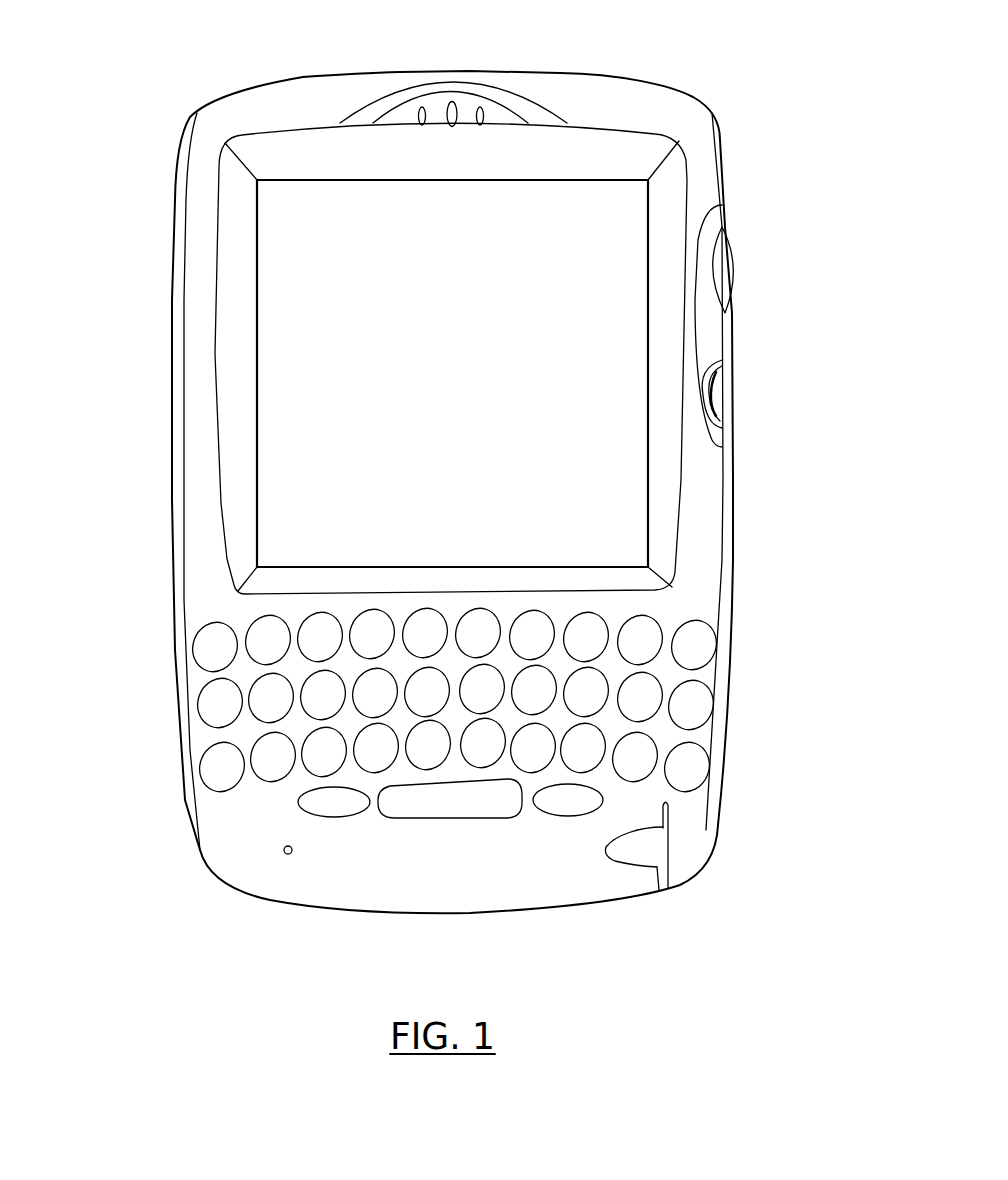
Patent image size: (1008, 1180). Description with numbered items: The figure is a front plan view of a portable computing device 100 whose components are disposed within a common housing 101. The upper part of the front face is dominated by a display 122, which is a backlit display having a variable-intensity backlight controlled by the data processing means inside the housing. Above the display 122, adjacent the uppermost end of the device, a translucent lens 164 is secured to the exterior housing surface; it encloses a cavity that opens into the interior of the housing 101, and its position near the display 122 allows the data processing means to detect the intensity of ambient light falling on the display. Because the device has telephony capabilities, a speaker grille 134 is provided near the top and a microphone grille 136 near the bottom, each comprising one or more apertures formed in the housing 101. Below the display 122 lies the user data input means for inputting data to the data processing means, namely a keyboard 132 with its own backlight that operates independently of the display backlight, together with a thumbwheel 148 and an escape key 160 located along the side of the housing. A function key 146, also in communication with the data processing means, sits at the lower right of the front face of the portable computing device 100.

The portable computing device 100 is at (163, 112).
The housing 101 is at (303, 77).
The translucent lens 164 is at (677, 107).
The display 122 is at (648, 480).
The speaker grille 134 is at (452, 127).
The thumbwheel 148 is at (733, 267).
The escape key 160 is at (718, 383).
The keyboard 132 is at (760, 605).
The function key 146 is at (617, 857).
The microphone grille 136 is at (286, 855).